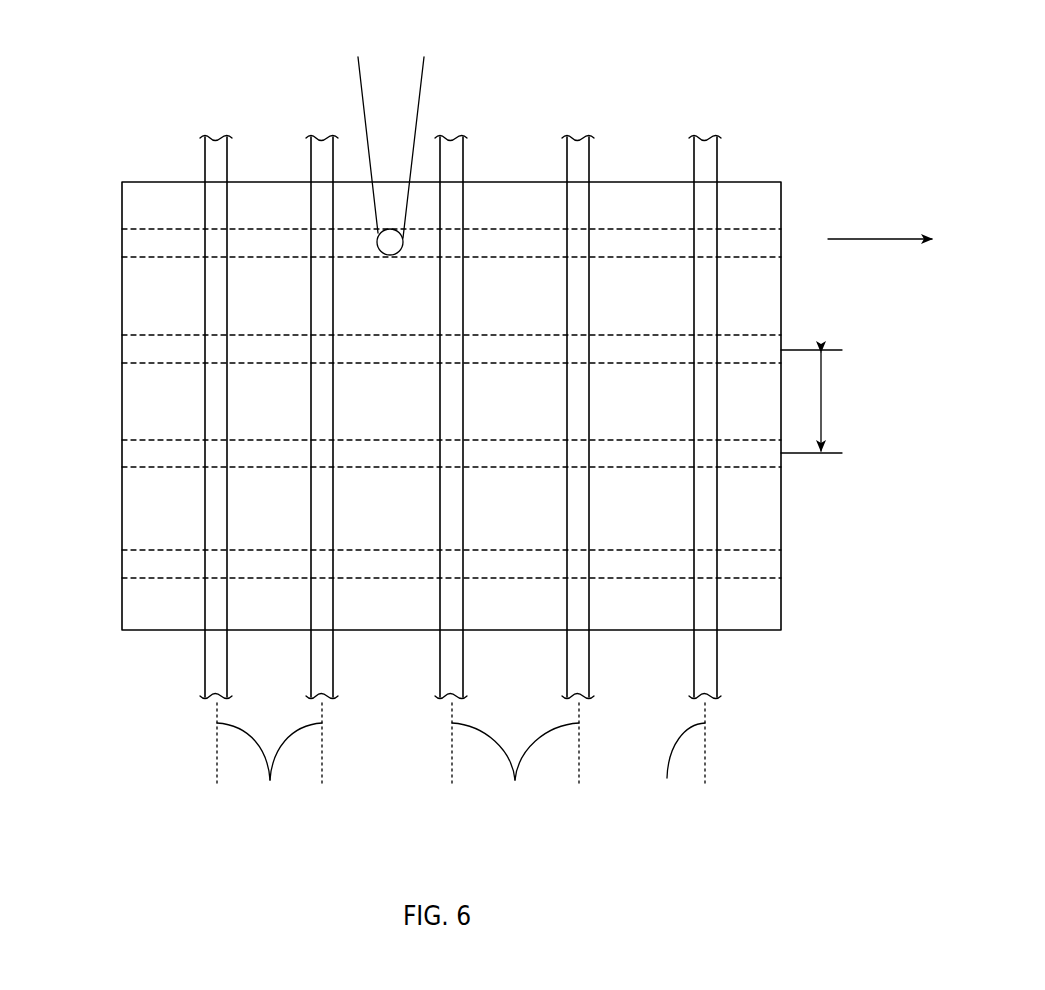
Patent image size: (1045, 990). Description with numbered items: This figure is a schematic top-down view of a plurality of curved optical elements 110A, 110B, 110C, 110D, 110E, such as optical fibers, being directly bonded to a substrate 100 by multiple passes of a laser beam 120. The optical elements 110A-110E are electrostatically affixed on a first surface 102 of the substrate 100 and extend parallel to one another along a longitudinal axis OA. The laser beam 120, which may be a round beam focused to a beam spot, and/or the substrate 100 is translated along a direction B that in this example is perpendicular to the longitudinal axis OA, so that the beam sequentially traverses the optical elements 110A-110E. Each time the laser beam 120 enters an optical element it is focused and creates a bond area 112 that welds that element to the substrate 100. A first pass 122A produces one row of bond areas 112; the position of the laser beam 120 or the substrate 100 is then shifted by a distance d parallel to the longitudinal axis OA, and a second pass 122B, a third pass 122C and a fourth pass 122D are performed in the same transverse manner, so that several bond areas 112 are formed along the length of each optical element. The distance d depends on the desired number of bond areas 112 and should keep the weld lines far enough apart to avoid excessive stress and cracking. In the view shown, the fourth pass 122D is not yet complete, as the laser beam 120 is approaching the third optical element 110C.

The substrate 100 is at (100, 670).
The first surface 102 is at (657, 272).
The optical element 110A is at (213, 135).
The optical element 110B is at (319, 135).
The third optical element 110C is at (454, 135).
The optical element 110D is at (581, 135).
The optical element 110E is at (708, 135).
The bond area 112 is at (309, 259).
The laser beam 120 is at (356, 80).
The first pass 122A is at (148, 549).
The second pass 122B is at (148, 439).
The third pass 122C is at (148, 334).
The fourth pass 122D is at (148, 228).
The direction B is at (880, 239).
The distance d is at (812, 401).
The longitudinal axis OA is at (461, 759).